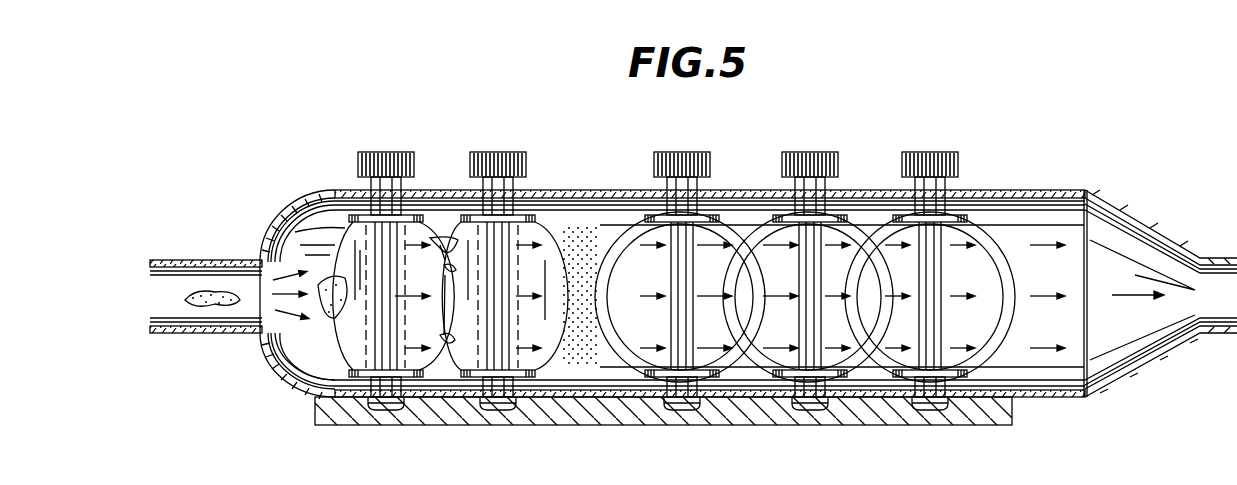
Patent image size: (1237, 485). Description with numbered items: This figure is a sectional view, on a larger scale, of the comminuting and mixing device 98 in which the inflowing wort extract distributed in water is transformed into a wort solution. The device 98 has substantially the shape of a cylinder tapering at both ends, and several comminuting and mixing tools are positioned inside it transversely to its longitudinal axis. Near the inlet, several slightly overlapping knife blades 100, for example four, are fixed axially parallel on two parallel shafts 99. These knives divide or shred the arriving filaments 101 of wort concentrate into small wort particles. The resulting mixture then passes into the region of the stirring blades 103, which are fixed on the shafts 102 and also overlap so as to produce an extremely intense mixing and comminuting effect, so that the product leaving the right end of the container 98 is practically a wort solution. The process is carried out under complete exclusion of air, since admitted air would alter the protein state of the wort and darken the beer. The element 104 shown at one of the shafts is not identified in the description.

The comminuting and mixing device 98 is at (573, 190).
The parallel shafts 99 is at (482, 188).
The knife blades 100 is at (470, 352).
The filaments 101 is at (210, 308).
The shafts 102 is at (795, 187).
The stirring blades 103 is at (897, 376).
The knob 104 is at (958, 160).